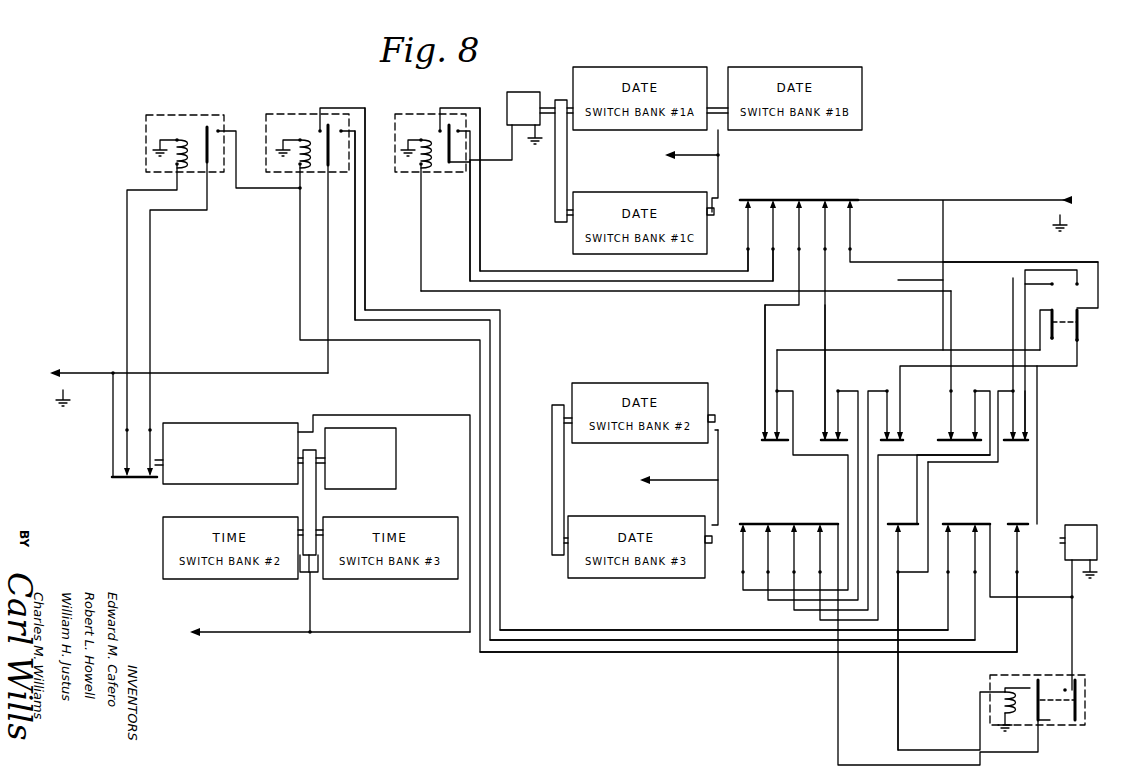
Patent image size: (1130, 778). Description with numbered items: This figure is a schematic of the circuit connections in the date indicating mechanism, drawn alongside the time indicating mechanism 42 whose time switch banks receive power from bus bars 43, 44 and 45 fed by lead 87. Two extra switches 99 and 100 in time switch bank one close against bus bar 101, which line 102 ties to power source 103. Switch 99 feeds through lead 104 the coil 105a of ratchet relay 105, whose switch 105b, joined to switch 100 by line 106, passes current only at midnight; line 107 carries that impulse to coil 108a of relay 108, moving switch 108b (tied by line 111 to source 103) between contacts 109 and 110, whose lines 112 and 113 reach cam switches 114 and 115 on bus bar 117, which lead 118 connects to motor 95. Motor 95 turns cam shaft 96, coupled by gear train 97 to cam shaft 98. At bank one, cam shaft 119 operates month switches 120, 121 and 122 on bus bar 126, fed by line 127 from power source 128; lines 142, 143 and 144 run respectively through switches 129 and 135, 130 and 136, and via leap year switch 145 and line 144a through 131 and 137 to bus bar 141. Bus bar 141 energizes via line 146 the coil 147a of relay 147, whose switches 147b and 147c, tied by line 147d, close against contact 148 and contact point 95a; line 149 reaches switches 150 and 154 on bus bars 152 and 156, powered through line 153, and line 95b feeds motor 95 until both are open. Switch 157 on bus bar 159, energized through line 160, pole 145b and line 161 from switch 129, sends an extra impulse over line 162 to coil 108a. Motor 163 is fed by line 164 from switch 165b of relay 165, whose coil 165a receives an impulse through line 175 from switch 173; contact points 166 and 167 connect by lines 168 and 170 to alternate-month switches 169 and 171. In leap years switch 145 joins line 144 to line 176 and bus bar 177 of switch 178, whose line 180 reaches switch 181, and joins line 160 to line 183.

The time indicating mechanism 42 is at (360, 458).
The bus bar 43 is at (302, 424).
The bus bar 44 is at (302, 580).
The bus bar 45 is at (317, 580).
The lead 87 is at (282, 636).
The motor 95 is at (1078, 551).
The contact point 95a is at (1068, 688).
The line 95b is at (1074, 618).
The cam shaft 96 is at (714, 535).
The gear train 97 is at (552, 514).
The cam shaft 98 is at (714, 415).
The switch 99 is at (128, 450).
The switch 100 is at (152, 428).
The bus bar 101 is at (140, 480).
The line 102 is at (112, 432).
The power source 103 is at (51, 380).
The lead 104 is at (127, 298).
The relay 105 is at (153, 115).
The coil 105a is at (176, 161).
The switch 105b is at (210, 128).
The line 106 is at (150, 304).
The line 107 is at (276, 192).
The ratchet relay 108 is at (268, 114).
The coil 108a is at (302, 170).
The switch 108b is at (331, 170).
The contact 109 is at (320, 128).
The contact 110 is at (342, 128).
The line 111 is at (256, 370).
The line 112 is at (365, 262).
The line 113 is at (356, 300).
The cam operated switch 114 is at (945, 562).
The cam operated switch 115 is at (975, 556).
The bus bar 117 is at (968, 522).
The lead 118 is at (1056, 598).
The cam shaft 119 is at (716, 210).
The cam operated switch 120 is at (790, 243).
The cam operated switch 121 is at (820, 243).
The cam operated switch 122 is at (851, 240).
The bus bar 126 is at (843, 200).
The line 127 is at (930, 200).
The power source 128 is at (1070, 203).
The switch 129 is at (780, 436).
The switch 130 is at (838, 390).
The switch 131 is at (899, 390).
The cam operated switch 135 is at (741, 572).
The cam operated switch 136 is at (767, 565).
The cam operated switch 137 is at (793, 565).
The bus bar 141 is at (805, 522).
The line 142 is at (765, 326).
The line 143 is at (825, 334).
The line 144 is at (985, 262).
The line 144a is at (1045, 367).
The double pole switch 145 is at (1080, 322).
The pole 145b is at (1053, 312).
The line 146 is at (836, 688).
The relay 147 is at (1080, 728).
The coil 147a is at (1012, 725).
The switch 147b is at (1040, 682).
The switch 147c is at (1078, 690).
The line 147d is at (1050, 722).
The contact 148 is at (1030, 688).
The line 149 is at (899, 695).
The cam operated switch 150 is at (896, 514).
The bus bar 152 is at (898, 532).
The line 153 is at (928, 468).
The cam operated switch 154 is at (973, 392).
The bus bar 156 is at (975, 444).
The cam switch 157 is at (1018, 566).
The bus bar 159 is at (1017, 522).
The line 160 is at (1037, 455).
The line 161 is at (935, 350).
The line 162 is at (760, 653).
The motor 163 is at (531, 118).
The line 164 is at (506, 163).
The ratchet type relay 165 is at (402, 114).
The coil 165a is at (419, 172).
The switch 165b is at (449, 168).
The contact point 166 is at (440, 127).
The contact point 167 is at (460, 128).
The line 168 is at (481, 262).
The cam operated switch 169 is at (746, 244).
The line 170 is at (470, 242).
The cam operated switch 171 is at (771, 244).
The cam switch 173 is at (952, 394).
The line 175 is at (684, 293).
The line 176 is at (1013, 280).
The bus bar 177 is at (1025, 448).
The cam switch 178 is at (1013, 450).
The line 180 is at (905, 438).
The cam switch 181 is at (819, 565).
The line 183 is at (1013, 326).